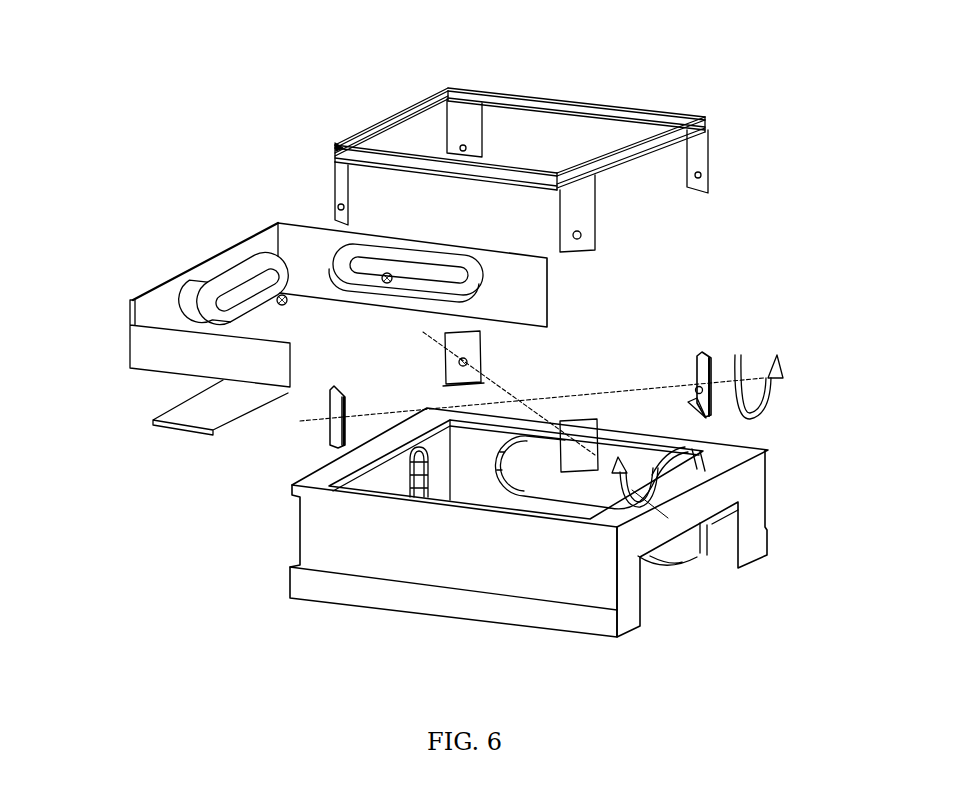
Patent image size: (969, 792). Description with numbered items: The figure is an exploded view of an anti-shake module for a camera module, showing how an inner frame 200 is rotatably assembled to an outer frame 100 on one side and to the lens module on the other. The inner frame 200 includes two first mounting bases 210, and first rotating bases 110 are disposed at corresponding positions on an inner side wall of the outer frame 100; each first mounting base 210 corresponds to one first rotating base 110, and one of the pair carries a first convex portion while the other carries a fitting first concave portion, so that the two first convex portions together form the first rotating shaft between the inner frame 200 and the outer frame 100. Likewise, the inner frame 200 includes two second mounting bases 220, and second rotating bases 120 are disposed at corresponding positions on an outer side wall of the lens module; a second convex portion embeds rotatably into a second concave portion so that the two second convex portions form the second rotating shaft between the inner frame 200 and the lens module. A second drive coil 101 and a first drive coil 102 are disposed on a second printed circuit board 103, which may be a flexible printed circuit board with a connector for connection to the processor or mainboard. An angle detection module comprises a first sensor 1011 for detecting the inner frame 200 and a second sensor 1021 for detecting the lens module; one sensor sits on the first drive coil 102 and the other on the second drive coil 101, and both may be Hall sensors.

The outer frame 100 is at (400, 530).
The second drive coil 101 is at (298, 337).
The first sensor 1011 is at (268, 290).
The first drive coil 102 is at (303, 314).
The second sensor 1021 is at (385, 279).
The second printed circuit board 103 is at (210, 410).
The first rotating base 110 is at (330, 428).
The second rotating base 120 is at (462, 347).
The inner frame 200 is at (568, 102).
The first mounting base 210 is at (331, 158).
The second mounting base 220 is at (467, 123).